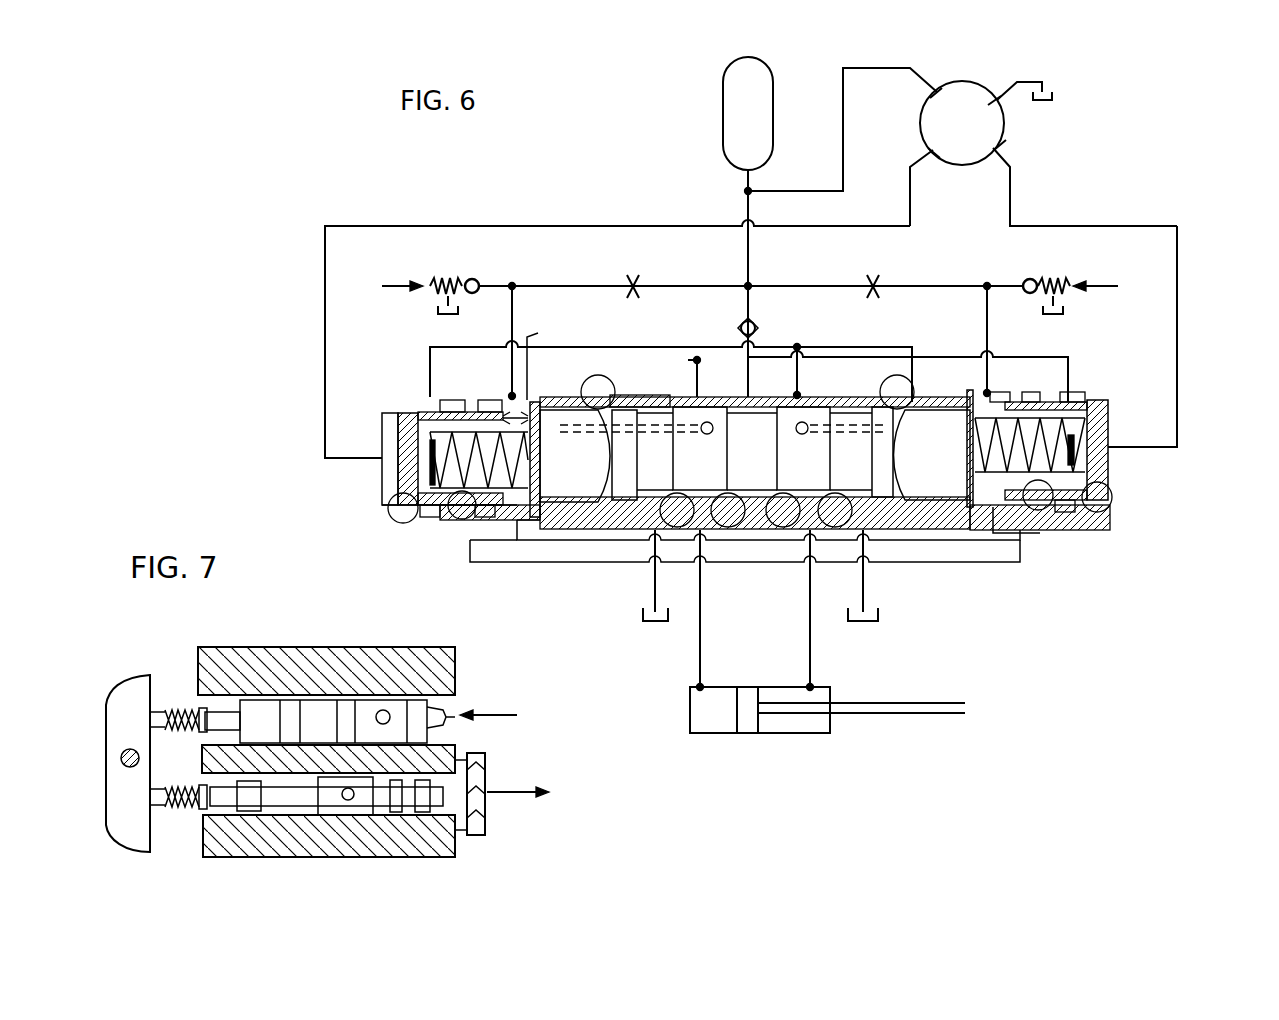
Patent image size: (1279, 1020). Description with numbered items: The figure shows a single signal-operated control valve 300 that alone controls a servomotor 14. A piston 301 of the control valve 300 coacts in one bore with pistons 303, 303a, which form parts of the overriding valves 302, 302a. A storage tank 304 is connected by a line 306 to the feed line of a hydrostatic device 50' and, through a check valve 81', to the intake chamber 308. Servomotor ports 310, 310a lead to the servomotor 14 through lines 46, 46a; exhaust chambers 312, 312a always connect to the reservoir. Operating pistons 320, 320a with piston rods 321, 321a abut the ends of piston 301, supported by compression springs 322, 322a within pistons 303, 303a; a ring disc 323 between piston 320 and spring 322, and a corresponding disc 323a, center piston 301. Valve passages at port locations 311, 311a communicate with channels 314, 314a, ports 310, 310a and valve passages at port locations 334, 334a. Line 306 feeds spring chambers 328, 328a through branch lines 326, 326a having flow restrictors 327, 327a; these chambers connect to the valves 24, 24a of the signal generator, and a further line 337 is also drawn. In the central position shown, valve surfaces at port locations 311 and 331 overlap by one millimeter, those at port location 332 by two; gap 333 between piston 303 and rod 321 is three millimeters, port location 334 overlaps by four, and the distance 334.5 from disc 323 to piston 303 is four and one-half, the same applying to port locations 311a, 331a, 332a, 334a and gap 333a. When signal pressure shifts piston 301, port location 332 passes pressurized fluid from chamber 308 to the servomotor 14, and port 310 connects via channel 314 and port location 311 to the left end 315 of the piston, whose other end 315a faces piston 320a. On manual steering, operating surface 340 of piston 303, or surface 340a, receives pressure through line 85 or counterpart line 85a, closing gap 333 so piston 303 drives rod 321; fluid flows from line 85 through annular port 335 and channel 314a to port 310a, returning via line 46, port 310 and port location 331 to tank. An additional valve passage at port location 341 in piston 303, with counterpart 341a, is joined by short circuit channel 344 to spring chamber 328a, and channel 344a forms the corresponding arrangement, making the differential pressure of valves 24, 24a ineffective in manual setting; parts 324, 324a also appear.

The servomotor 14 is at (710, 710).
The valve of signal generator 24 is at (458, 283).
The valve of signal generator 24a is at (1052, 282).
The line 46 is at (699, 641).
The line 46a is at (811, 641).
The hydrostatic device 50' is at (962, 134).
The check valve 81' is at (772, 326).
The line 85 is at (325, 273).
The frame line 85a is at (1177, 272).
The signal operated control valve 300 is at (757, 545).
The piston 301 is at (770, 459).
The overriding valve 302 is at (414, 536).
The overriding valve 302a is at (1120, 498).
The piston 303 is at (407, 432).
The piston 303a is at (1100, 418).
The storage tank 304 is at (722, 103).
The line 306 is at (757, 253).
The intake chamber 308 is at (727, 406).
The servomotor port 310 is at (682, 398).
The servomotor port 310a is at (817, 400).
The port location 311 is at (601, 398).
The port location 311a is at (935, 402).
The exhaust chamber 312 is at (652, 412).
The exhaust chamber 312a is at (849, 410).
The channel 314 is at (670, 396).
The channel 314a is at (893, 356).
The left end of piston 315 is at (603, 545).
The spool section 315a is at (903, 527).
The operating piston 320 is at (568, 478).
The operating piston 320a is at (937, 478).
The piston rod 321 is at (452, 400).
The piston rod 321a is at (1072, 396).
The compression spring 322 is at (476, 518).
The compression spring 322a is at (1105, 402).
The ring disc 323 is at (582, 396).
The pressure port 323a is at (966, 400).
The spring seat 324 is at (595, 408).
The spring seat 324a is at (968, 527).
The branch line 326 is at (686, 284).
The branch line 326a is at (826, 284).
The flow restrictor 327 is at (633, 280).
The flow restrictor 327a is at (877, 281).
The spring chamber 328 is at (511, 400).
The spring chamber 328a is at (1015, 395).
The port location 331 is at (677, 527).
The port location 331a is at (835, 527).
The port location 332 is at (728, 527).
The port location 332a is at (783, 527).
The gap 333 is at (420, 482).
The gap 333a is at (1108, 472).
The port location 334 is at (400, 512).
The port location 334a is at (1097, 515).
The distance 334.5 is at (566, 360).
The annular port 335 is at (420, 402).
The pilot line 337 is at (460, 348).
The operating surface 340 is at (420, 466).
The cap wall 340a is at (1085, 455).
The port location 341 is at (455, 515).
The port 341a is at (1040, 515).
The short circuit channel 344 is at (525, 545).
The short circuit channel 344a is at (1020, 545).